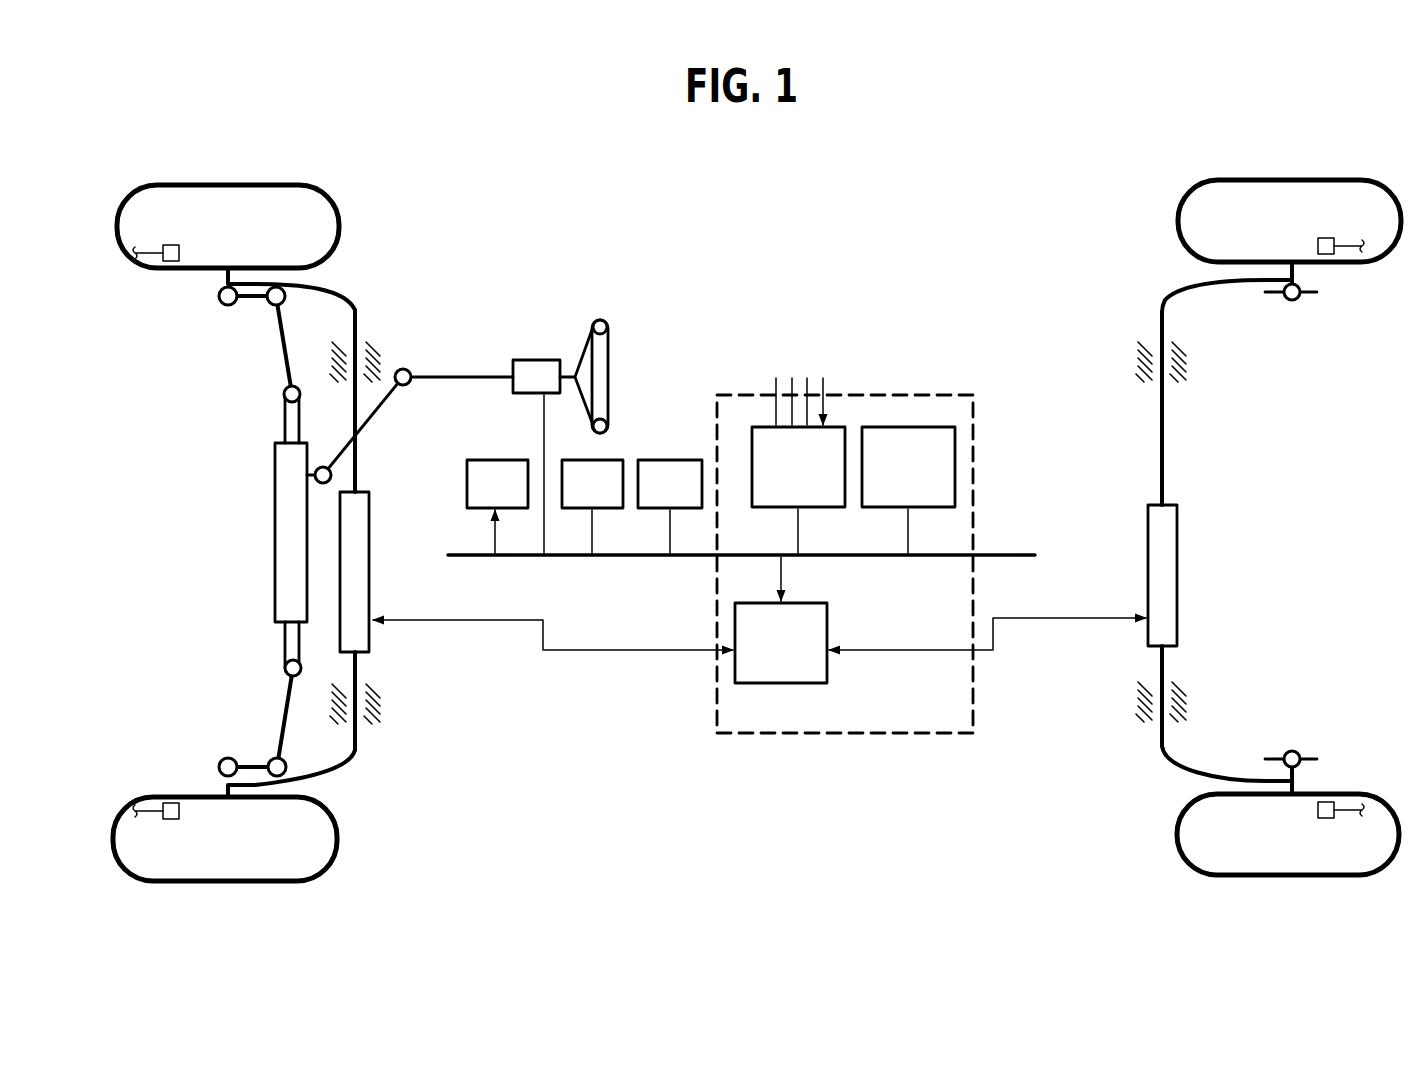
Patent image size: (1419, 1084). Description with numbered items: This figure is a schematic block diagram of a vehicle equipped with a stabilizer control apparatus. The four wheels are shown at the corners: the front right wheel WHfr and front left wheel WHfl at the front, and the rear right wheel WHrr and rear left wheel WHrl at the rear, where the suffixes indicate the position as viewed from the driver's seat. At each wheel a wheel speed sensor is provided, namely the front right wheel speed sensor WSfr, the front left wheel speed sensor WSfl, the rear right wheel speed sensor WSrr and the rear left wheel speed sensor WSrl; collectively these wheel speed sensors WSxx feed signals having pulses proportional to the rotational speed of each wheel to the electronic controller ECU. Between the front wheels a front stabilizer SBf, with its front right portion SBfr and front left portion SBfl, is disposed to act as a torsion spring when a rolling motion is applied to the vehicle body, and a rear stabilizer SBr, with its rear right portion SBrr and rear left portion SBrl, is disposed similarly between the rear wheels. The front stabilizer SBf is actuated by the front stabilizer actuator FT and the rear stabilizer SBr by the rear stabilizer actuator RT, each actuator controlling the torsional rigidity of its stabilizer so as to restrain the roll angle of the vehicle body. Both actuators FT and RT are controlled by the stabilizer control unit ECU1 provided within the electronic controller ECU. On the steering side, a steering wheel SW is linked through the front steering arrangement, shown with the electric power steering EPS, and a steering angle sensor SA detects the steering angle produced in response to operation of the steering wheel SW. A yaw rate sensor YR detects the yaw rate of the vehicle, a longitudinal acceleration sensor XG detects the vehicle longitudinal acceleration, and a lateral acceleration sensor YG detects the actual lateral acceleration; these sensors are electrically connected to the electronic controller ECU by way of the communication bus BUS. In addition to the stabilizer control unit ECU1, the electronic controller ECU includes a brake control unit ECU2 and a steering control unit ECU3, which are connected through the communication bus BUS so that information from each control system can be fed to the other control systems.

The front right wheel WHfr is at (228, 226).
The front right wheel speed sensor WSfr is at (152, 275).
The front stabilizer SBf is at (341, 282).
The front right stabilizer portion SBfr is at (358, 300).
The front left stabilizer portion SBfl is at (358, 742).
The electric power steering EPS is at (275, 478).
The front stabilizer actuator FT is at (370, 545).
The front left wheel WHfl is at (225, 839).
The front left wheel speed sensor WSfl is at (150, 792).
The steering angle sensor SA is at (536, 376).
The steering wheel SW is at (600, 318).
The yaw rate sensor YR is at (497, 484).
The longitudinal acceleration sensor XG is at (592, 484).
The lateral acceleration sensor YG is at (670, 484).
The communication bus BUS is at (742, 537).
The electronic controller ECU is at (867, 392).
The wheel speed sensors WSxx is at (798, 387).
The stabilizer control unit ECU1 is at (781, 643).
The brake control unit ECU2 is at (798, 467).
The steering control unit ECU3 is at (908, 467).
The rear right wheel WHrr is at (1289, 221).
The rear right wheel speed sensor WSrr is at (1319, 265).
The rear stabilizer SBr is at (1174, 280).
The rear right stabilizer portion SBrr is at (1163, 298).
The rear left stabilizer portion SBrl is at (1162, 745).
The rear stabilizer actuator RT is at (1178, 512).
The rear left wheel WHrl is at (1288, 834).
The rear left wheel speed sensor WSrl is at (1318, 784).